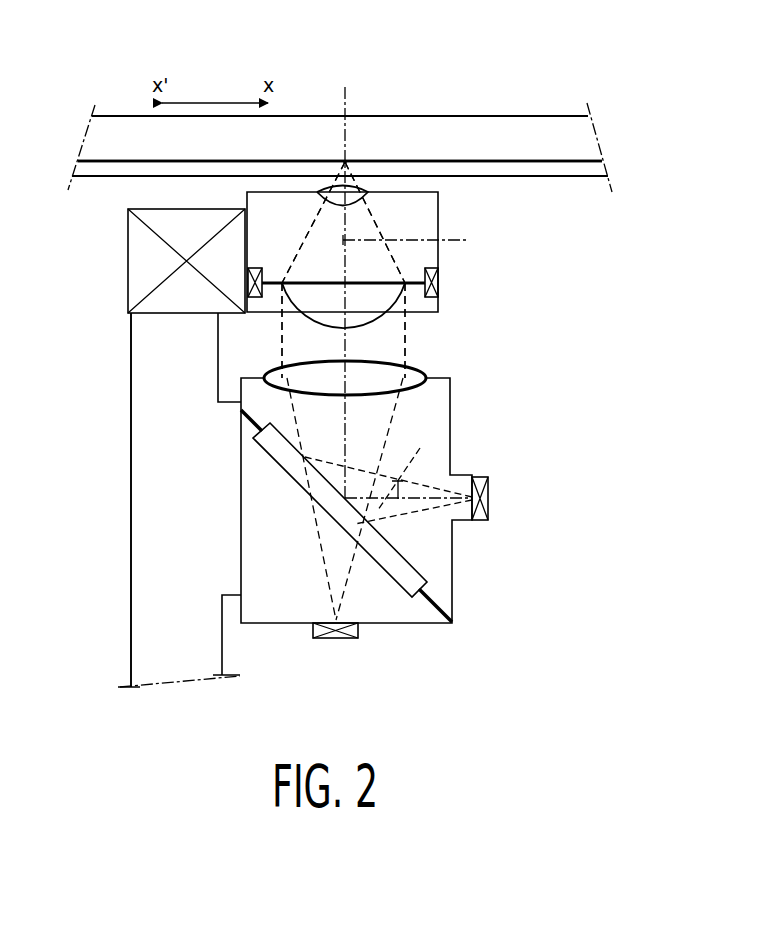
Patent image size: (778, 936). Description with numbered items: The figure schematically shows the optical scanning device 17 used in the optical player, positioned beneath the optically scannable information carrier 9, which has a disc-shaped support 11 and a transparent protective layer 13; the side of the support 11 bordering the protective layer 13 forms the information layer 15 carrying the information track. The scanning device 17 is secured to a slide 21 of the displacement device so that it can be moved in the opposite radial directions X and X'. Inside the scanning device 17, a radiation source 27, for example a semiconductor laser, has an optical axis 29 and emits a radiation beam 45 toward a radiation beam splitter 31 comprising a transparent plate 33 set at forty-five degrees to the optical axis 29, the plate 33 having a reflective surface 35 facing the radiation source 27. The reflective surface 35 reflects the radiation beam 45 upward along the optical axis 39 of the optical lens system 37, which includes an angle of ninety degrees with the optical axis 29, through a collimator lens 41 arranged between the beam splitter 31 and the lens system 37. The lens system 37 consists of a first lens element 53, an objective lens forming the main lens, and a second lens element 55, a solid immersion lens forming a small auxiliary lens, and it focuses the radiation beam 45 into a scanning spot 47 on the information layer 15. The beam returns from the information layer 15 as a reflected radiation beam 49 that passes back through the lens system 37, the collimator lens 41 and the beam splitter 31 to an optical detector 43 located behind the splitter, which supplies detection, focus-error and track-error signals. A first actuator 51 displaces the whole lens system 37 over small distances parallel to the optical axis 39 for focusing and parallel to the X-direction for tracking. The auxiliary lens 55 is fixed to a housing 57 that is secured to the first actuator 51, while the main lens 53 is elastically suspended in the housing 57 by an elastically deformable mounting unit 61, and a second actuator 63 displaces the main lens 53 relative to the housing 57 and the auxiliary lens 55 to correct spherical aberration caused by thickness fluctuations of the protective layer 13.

The information carrier 9 is at (512, 93).
The disc-shaped support 11 is at (455, 125).
The transparent protective layer 13 is at (585, 178).
The information layer 15 is at (529, 164).
The optical scanning device 17 is at (594, 421).
The slide 21 is at (142, 617).
The radiation source 27 is at (488, 498).
The optical axis 29 is at (388, 473).
The radiation beam splitter 31 is at (334, 516).
The transparent plate 33 is at (405, 565).
The reflective surface 35 is at (398, 547).
The optical lens system 37 is at (512, 292).
The optical axis 39 is at (417, 241).
The collimator lens 41 is at (428, 382).
The optical detector 43 is at (335, 640).
The radiation beam 45 is at (430, 482).
The scanning spot 47 is at (346, 160).
The reflected radiation beam 49 is at (310, 558).
The first actuator 51 is at (128, 261).
The first lens element 53 is at (313, 313).
The second lens element 55 is at (365, 198).
The housing 57 is at (440, 257).
The elastically deformable mounting unit 61 is at (325, 278).
The second actuator 63 is at (258, 266).